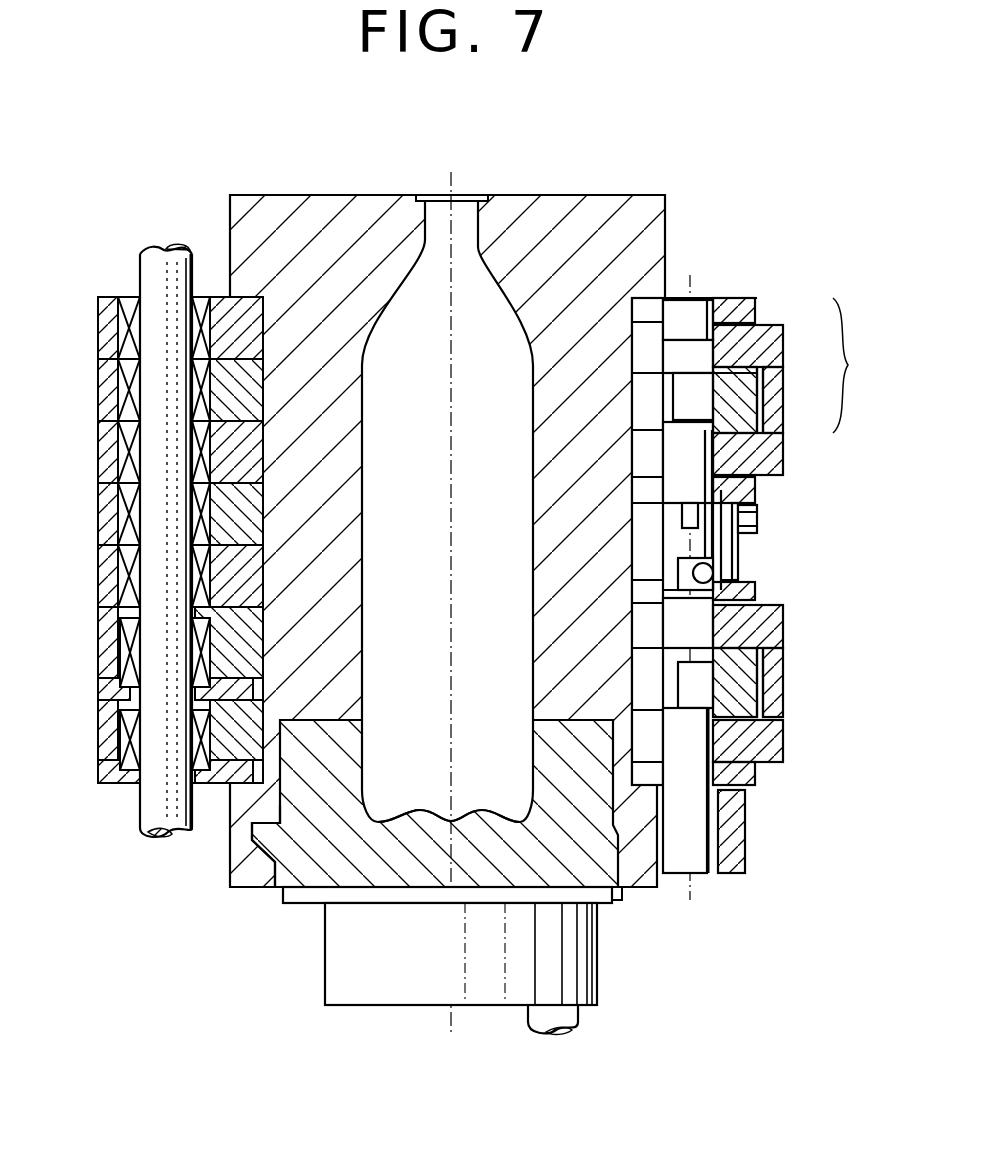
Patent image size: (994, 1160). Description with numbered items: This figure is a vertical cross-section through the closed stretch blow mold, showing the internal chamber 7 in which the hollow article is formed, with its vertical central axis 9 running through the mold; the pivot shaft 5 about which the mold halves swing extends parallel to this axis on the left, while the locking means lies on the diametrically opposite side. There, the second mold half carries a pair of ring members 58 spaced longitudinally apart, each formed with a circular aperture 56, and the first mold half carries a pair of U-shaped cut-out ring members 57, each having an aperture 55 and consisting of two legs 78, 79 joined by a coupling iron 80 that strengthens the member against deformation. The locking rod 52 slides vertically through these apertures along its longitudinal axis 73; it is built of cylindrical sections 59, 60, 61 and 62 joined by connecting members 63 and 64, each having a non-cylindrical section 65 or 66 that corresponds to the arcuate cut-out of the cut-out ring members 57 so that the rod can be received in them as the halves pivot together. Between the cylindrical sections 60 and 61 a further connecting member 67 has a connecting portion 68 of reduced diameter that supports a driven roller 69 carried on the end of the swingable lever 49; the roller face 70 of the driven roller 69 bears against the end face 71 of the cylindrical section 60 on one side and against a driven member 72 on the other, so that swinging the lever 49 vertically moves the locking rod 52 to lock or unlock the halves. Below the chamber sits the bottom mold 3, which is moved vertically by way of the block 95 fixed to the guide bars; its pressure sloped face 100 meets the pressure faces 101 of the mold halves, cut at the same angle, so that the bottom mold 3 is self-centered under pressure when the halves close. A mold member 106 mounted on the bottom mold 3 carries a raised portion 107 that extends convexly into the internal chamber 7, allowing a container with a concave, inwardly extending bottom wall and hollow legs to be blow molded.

The bottom mold 3 is at (290, 868).
The pivot shaft 5 is at (153, 802).
The internal chamber 7 is at (463, 568).
The central axis 9 is at (449, 185).
The swingable lever 49 is at (735, 572).
The locking rod 52 is at (700, 862).
The aperture 55 is at (625, 648).
The aperture 56 is at (680, 378).
The cut-out ring members 57 is at (822, 281).
The ring members 58 is at (745, 445).
The cylindrical section 59 is at (673, 342).
The cylindrical section 60 is at (670, 462).
The cylindrical section 61 is at (674, 634).
The cylindrical section 62 is at (674, 754).
The connecting member 63 is at (681, 412).
The connecting member 64 is at (681, 697).
The non-cylindrical section 65 is at (685, 405).
The non-cylindrical section 66 is at (680, 688).
The connecting member 67 is at (675, 548).
The connecting portion 68 is at (682, 520).
The driven roller 69 is at (748, 518).
The roller face 70 is at (697, 575).
The end face 71 is at (694, 495).
The driven member 72 is at (735, 548).
The longitudinal axis 73 is at (688, 283).
The leg 78 is at (765, 338).
The leg 79 is at (750, 440).
The coupling iron 80 is at (770, 380).
The block 95 is at (595, 960).
The pressure sloped face 100 is at (180, 540).
The pressure faces 101 is at (265, 840).
The mold member 106 is at (267, 860).
The raised portion 107 is at (430, 810).